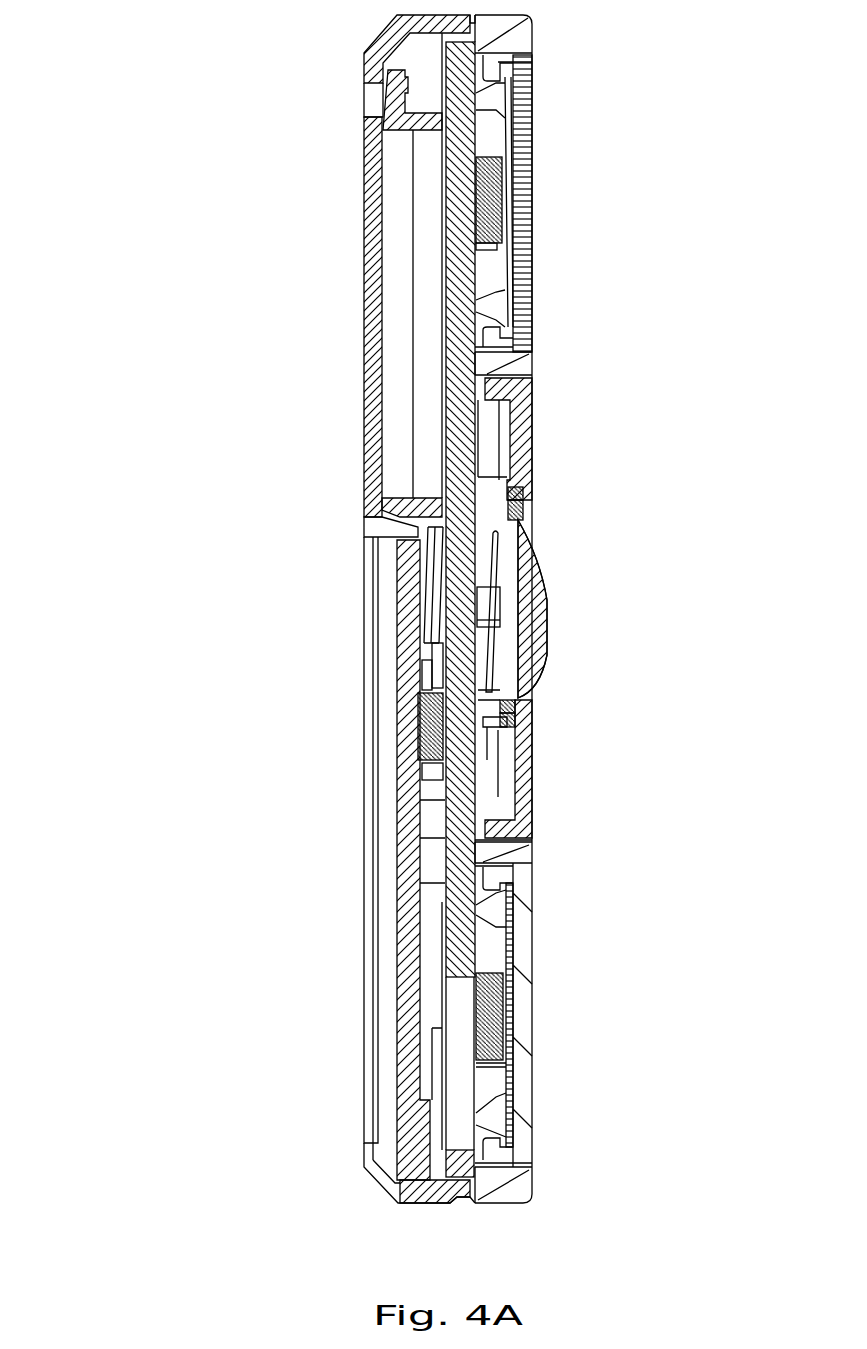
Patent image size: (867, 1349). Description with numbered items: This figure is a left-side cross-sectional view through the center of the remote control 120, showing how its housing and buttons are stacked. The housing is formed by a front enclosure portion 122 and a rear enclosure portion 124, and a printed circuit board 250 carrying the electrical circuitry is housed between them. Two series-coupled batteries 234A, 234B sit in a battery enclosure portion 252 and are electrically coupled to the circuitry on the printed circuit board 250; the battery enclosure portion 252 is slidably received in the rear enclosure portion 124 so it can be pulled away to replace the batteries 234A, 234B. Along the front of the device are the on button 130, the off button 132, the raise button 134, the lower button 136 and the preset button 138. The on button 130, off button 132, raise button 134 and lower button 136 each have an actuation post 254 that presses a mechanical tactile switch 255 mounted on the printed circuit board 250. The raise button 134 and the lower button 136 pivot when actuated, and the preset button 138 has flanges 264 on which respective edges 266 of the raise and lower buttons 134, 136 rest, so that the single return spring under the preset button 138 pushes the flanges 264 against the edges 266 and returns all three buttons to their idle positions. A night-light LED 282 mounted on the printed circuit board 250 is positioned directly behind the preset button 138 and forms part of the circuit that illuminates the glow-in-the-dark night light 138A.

The remote control 120 is at (204, 631).
The front enclosure portion 122 is at (523, 1205).
The rear enclosure portion 124 is at (362, 415).
The on button 130 is at (533, 238).
The off button 132 is at (522, 952).
The raise button 134 is at (533, 408).
The lower button 136 is at (533, 820).
The preset button 138 is at (545, 610).
The glow-in-the-dark night light 138A is at (532, 609).
The battery 234A is at (430, 330).
The battery 234B is at (400, 273).
The printed circuit board 250 is at (447, 208).
The battery enclosure portion 252 is at (400, 445).
The actuation post 254 is at (533, 202).
The mechanical tactile switch 255 is at (503, 193).
The flange 264 is at (525, 503).
The edge 266 is at (530, 495).
The night-light LED 282 is at (474, 583).